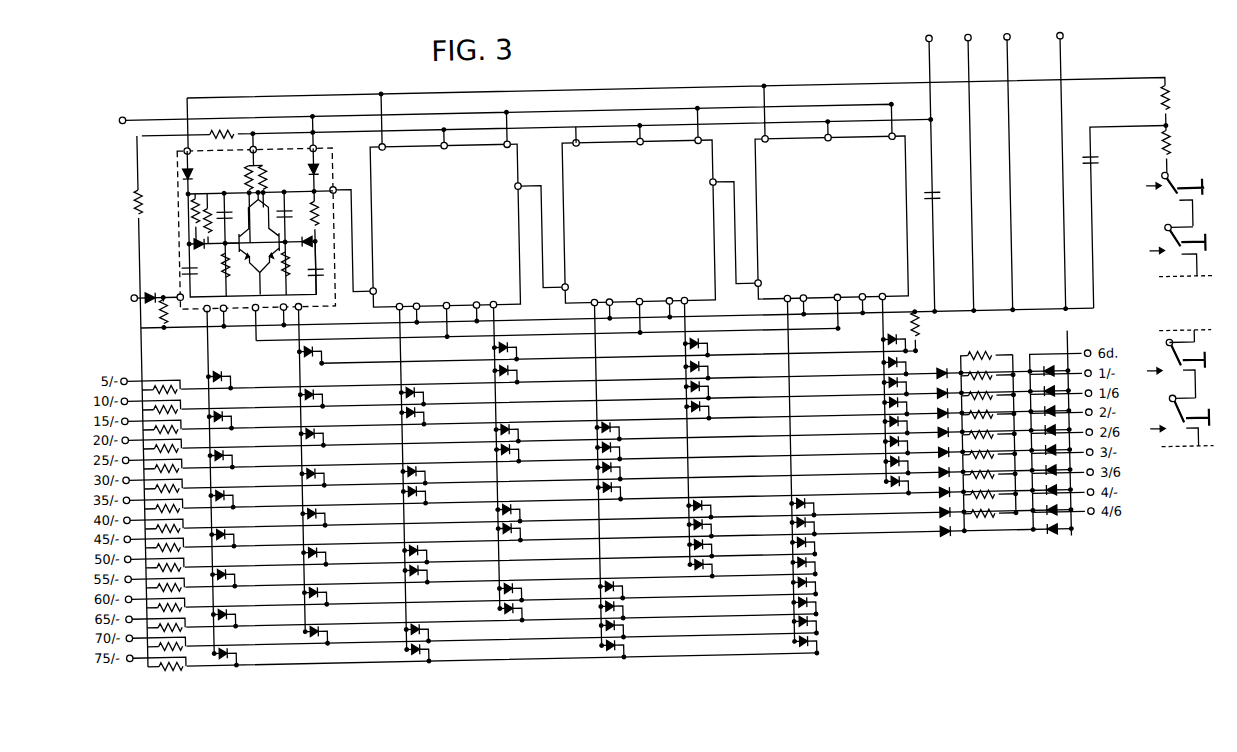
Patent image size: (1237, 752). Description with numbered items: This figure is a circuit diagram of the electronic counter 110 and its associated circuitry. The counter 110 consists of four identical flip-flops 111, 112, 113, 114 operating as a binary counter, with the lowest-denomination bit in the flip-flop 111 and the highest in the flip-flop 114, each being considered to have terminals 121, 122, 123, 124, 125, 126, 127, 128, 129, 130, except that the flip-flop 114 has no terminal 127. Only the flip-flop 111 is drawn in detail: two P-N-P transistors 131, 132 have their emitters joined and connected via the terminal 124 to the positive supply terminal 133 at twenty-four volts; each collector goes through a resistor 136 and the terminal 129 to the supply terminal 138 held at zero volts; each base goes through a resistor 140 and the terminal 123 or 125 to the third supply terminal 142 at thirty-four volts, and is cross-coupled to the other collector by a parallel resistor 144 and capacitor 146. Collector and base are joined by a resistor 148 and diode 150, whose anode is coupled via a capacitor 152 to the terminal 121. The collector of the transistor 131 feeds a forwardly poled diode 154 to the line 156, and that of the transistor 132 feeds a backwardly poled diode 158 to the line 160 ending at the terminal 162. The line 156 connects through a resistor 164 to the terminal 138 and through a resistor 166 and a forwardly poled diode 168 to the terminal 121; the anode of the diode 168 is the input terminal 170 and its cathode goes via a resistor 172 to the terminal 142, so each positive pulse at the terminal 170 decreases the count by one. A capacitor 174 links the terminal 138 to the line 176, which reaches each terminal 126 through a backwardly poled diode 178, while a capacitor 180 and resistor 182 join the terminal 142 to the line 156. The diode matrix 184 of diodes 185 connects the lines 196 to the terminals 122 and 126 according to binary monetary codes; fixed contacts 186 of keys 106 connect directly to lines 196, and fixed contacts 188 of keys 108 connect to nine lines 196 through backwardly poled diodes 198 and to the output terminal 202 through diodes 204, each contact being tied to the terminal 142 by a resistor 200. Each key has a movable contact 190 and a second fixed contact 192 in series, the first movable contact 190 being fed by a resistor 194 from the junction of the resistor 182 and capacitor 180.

The key 106 is at (1200, 381).
The key 108 is at (1196, 211).
The electronic counter 110 is at (535, 152).
The flip-flop 111 is at (287, 129).
The flip-flop 112 is at (439, 233).
The flip-flop 113 is at (630, 237).
The flip-flop 114 is at (824, 229).
The terminal 121 is at (468, 281).
The terminal 122 is at (486, 468).
The terminal 123 is at (517, 307).
The terminal 124 is at (535, 311).
The terminal 125 is at (561, 297).
The terminal 126 is at (602, 457).
The terminal 127 is at (544, 230).
The terminal 128 is at (614, 155).
The terminal 129 is at (536, 156).
The terminal 130 is at (470, 149).
The transistor 131 is at (242, 244).
The transistor 132 is at (271, 239).
The positive supply terminal 133 is at (966, 162).
The resistor 136 is at (258, 178).
The supply terminal 138 is at (933, 45).
The resistor 140 is at (255, 274).
The third supply terminal 142 is at (1005, 161).
The resistor 144 is at (185, 219).
The capacitor 146 is at (180, 219).
The resistor 148 is at (331, 216).
The diode 150 is at (272, 250).
The capacitor 152 is at (267, 269).
The forwardly poled diode 154 is at (202, 183).
The line 156 is at (290, 88).
The backwardly poled diode 158 is at (301, 171).
The line 160 is at (376, 110).
The terminal 162 is at (132, 110).
The resistor 164 is at (537, 128).
The resistor 166 is at (125, 232).
The forwardly poled diode 168 is at (142, 295).
The terminal 170 is at (123, 289).
The resistor 172 is at (152, 313).
The capacitor 174 is at (944, 205).
The line 176 is at (819, 357).
The backwardly poled diode 178 is at (602, 347).
The capacitor 180 is at (1103, 164).
The resistor 182 is at (1166, 111).
The diode matrix 184 is at (247, 366).
The diode 185 is at (322, 428).
The fixed contact 186 is at (632, 510).
The fixed contact 188 is at (1117, 366).
The movable contact 190 is at (1150, 295).
The second fixed contact 192 is at (1186, 318).
The resistor 194 is at (1167, 170).
The line 196 is at (367, 382).
The backwardly poled diode 198 is at (937, 374).
The resistor 200 is at (585, 503).
The output terminal 202 is at (1064, 46).
The backwardly poled diode 204 is at (1048, 438).